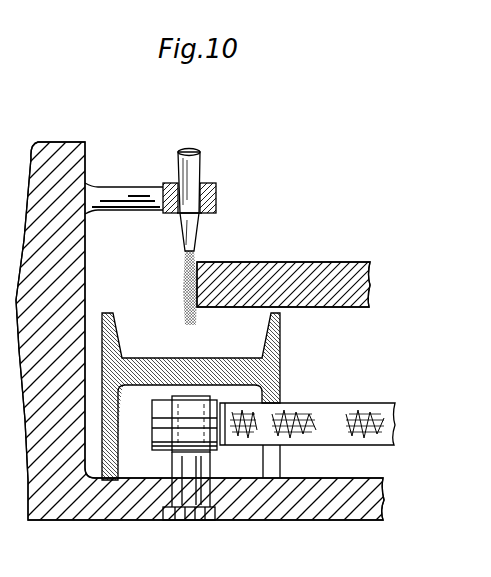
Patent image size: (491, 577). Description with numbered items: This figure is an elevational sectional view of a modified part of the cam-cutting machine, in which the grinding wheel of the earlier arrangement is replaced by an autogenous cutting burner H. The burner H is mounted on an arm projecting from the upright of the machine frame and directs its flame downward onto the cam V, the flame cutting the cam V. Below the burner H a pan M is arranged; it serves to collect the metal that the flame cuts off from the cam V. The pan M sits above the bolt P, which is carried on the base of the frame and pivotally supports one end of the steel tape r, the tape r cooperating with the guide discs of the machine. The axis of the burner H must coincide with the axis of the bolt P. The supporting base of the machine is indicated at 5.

The autogenous cutting burner H is at (193, 163).
The cam V is at (282, 270).
The pan M is at (281, 360).
The steel tape r is at (357, 411).
The bolt P is at (186, 493).
The base frame 5 is at (308, 504).